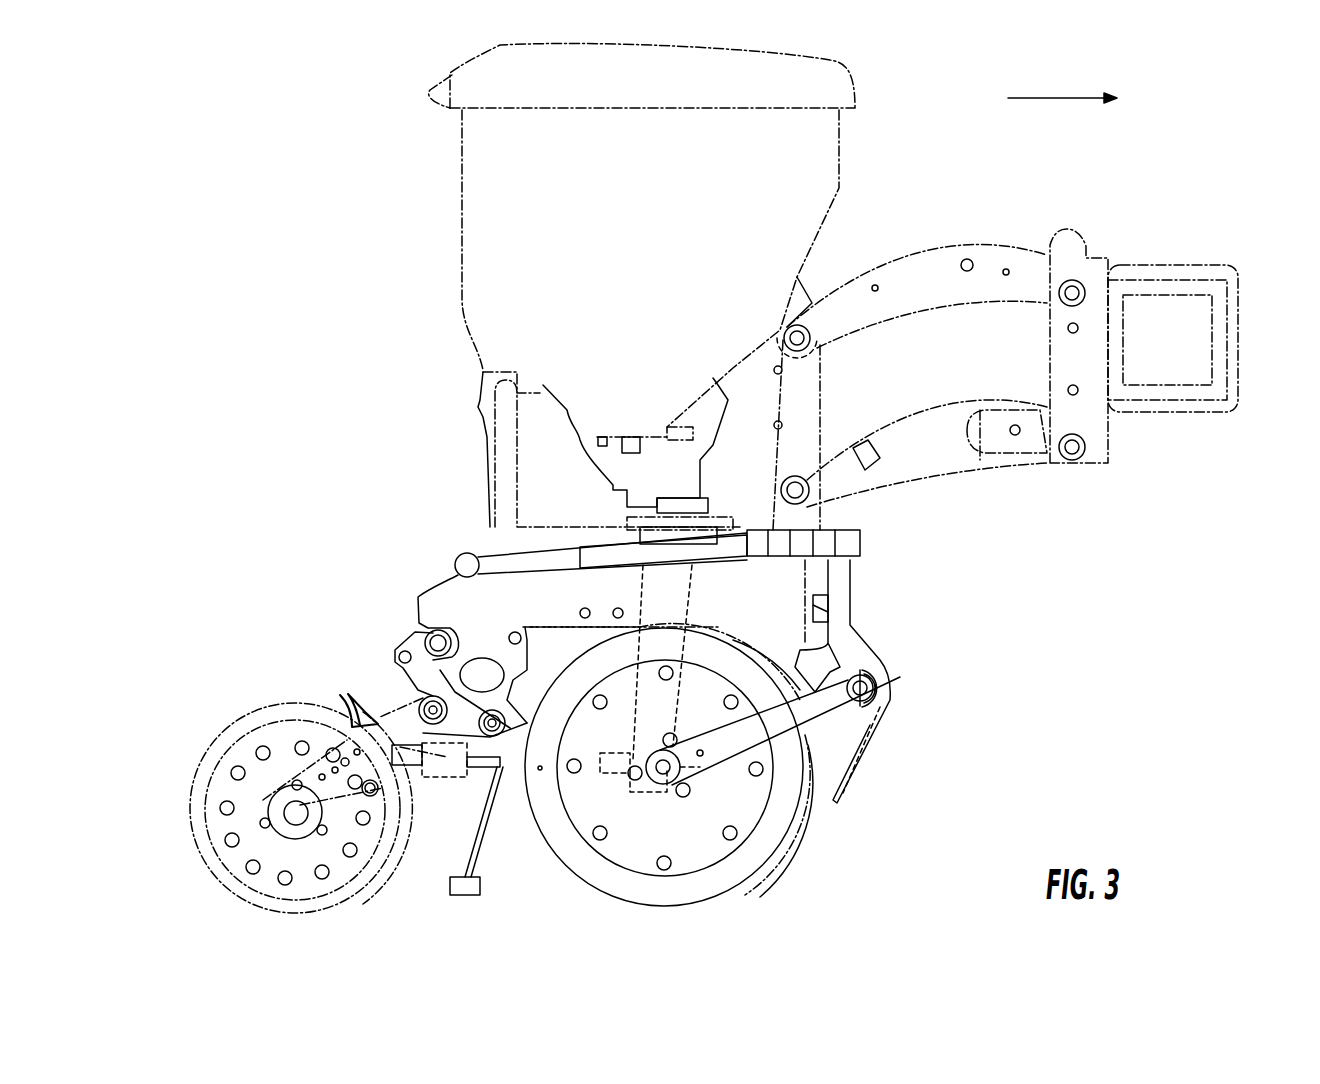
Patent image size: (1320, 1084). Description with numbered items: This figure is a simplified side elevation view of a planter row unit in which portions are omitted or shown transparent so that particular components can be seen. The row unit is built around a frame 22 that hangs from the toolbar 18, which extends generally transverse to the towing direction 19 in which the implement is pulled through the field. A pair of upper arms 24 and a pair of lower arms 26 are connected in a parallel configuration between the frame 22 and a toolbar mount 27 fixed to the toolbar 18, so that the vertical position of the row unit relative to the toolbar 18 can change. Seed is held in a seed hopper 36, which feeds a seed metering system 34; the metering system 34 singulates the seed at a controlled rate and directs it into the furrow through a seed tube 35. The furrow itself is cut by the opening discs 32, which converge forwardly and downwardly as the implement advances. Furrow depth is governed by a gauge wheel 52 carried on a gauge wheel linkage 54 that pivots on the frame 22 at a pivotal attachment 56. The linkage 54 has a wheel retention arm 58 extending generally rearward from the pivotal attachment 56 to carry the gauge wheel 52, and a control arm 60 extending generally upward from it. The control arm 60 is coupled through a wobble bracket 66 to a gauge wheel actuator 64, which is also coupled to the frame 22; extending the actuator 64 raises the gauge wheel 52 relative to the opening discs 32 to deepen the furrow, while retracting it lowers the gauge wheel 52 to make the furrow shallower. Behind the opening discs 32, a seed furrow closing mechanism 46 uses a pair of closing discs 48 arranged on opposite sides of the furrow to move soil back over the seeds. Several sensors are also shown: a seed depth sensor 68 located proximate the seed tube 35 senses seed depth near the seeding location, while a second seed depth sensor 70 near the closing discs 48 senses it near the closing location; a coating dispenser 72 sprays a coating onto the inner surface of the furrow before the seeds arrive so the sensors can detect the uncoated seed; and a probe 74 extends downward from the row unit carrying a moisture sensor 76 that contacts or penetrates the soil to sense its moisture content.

The toolbar 18 is at (1232, 325).
The towing direction 19 is at (1057, 98).
The frame 22 is at (470, 542).
The upper arms 24 is at (982, 242).
The lower arms 26 is at (940, 470).
The toolbar mount 27 is at (1092, 257).
The opening discs 32 is at (805, 838).
The seed metering system 34 is at (548, 458).
The seed tube 35 is at (643, 578).
The seed hopper 36 is at (458, 220).
The seed furrow closing mechanism 46 is at (152, 818).
The closing discs 48 is at (238, 733).
The gauge wheels 52 is at (587, 863).
The gauge wheel linkage 54 is at (785, 630).
The pivotal attachment 56 is at (875, 693).
The wheel retention arm 58 is at (727, 737).
The control arm 60 is at (840, 613).
The gauge wheel actuator 64 is at (540, 547).
The wobble bracket 66 is at (862, 545).
The seed depth sensor 68 is at (613, 777).
The seed depth sensor 70 is at (410, 765).
The coating dispenser 72 is at (690, 775).
The probe 74 is at (470, 843).
The moisture sensor 76 is at (467, 897).